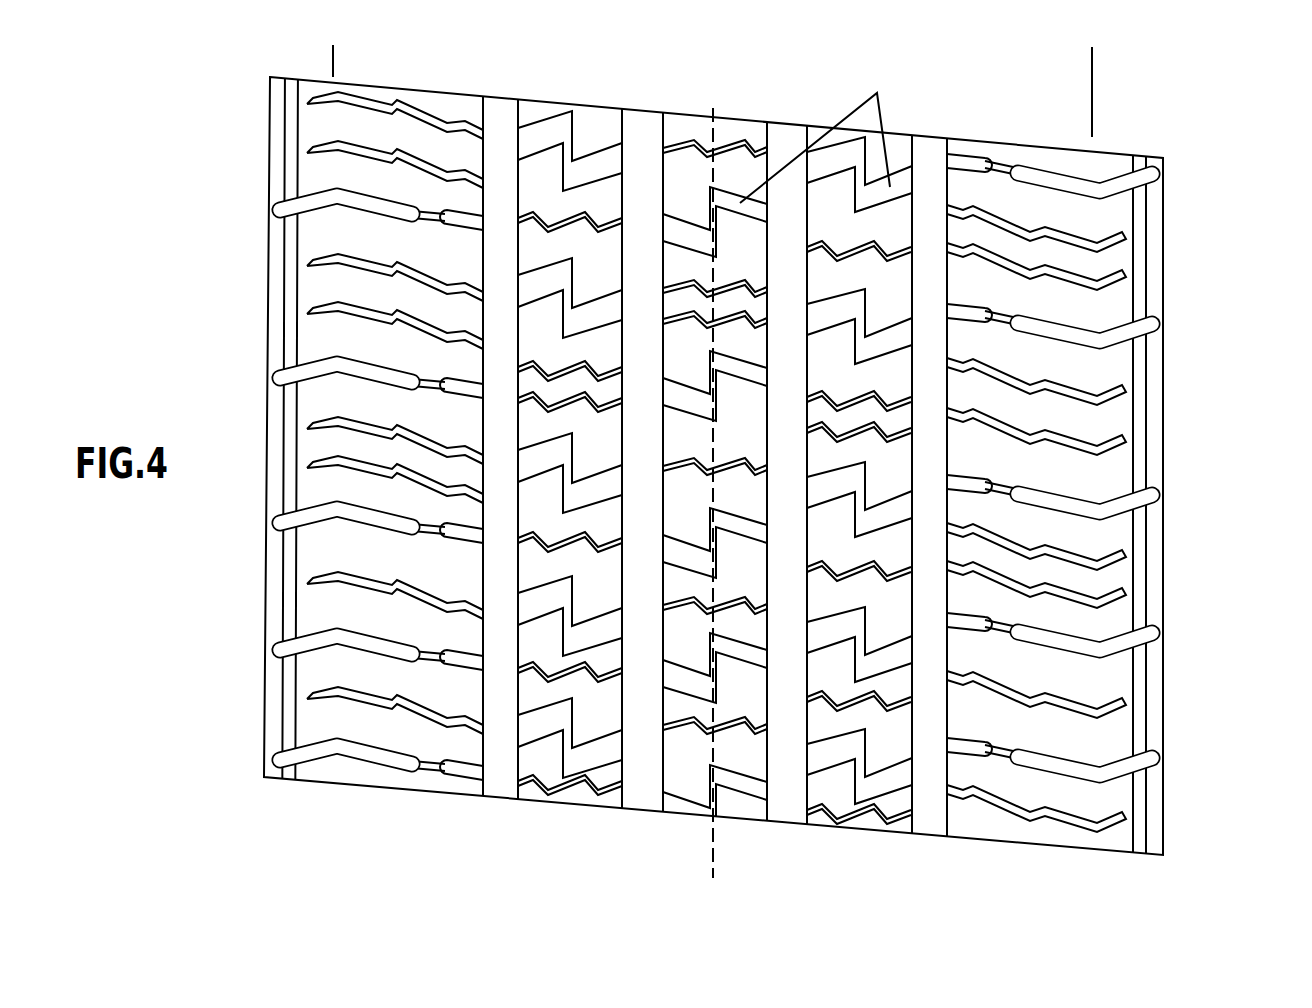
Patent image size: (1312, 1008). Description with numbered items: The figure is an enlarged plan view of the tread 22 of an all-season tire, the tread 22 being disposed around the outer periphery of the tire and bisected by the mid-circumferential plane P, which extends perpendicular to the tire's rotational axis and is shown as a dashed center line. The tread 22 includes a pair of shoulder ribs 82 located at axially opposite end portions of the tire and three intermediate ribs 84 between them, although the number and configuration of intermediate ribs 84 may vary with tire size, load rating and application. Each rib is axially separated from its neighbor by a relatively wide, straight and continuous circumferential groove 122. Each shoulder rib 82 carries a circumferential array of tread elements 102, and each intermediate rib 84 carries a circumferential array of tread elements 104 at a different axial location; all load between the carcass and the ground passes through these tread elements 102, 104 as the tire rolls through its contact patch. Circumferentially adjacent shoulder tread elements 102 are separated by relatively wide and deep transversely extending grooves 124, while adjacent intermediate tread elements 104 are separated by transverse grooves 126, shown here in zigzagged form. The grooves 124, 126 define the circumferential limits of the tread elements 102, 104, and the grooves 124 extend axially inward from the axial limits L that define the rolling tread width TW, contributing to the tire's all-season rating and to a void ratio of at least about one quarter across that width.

The tread 22 is at (1190, 138).
The shoulder ribs 82 is at (711, 497).
The intermediate ribs 84 is at (728, 486).
The tread elements 102 is at (323, 227).
The tread elements 104 is at (525, 792).
The circumferential groove 122 is at (498, 112).
The transversely extending groove 124 is at (357, 203).
The transverse groove 126 is at (542, 280).
The axial limits L is at (331, 47).
The rolling tread width TW is at (1092, 62).
The mid-circumferential plane P is at (714, 110).